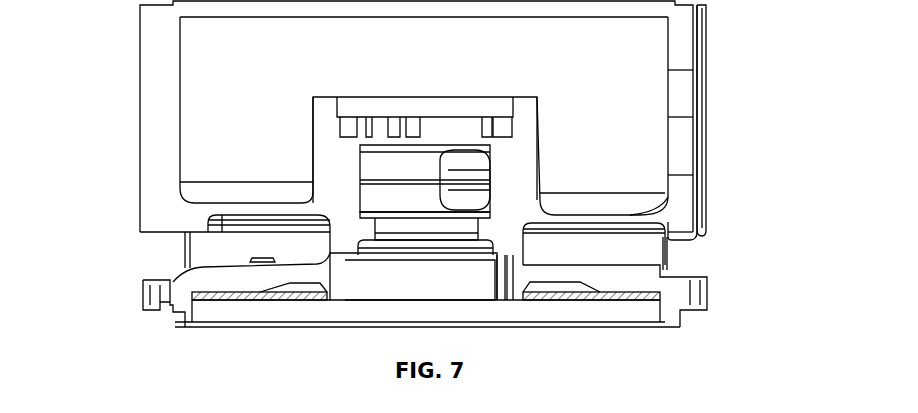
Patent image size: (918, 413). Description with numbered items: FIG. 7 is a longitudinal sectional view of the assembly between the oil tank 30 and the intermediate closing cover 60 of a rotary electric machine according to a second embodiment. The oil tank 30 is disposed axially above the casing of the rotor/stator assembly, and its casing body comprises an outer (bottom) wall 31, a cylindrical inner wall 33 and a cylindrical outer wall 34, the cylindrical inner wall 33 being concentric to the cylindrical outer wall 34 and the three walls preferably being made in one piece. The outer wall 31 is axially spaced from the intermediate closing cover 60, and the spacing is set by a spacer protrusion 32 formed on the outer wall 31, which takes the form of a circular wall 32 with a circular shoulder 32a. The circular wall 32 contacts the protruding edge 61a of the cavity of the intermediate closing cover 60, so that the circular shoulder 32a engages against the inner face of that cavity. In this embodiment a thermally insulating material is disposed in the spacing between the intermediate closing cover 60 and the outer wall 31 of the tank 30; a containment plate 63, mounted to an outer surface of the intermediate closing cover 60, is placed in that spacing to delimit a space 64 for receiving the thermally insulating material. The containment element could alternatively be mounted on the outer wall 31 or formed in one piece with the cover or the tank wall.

The oil tank 30 is at (135, 63).
The cylindrical outer wall 34 is at (158, 148).
The cylindrical inner wall 33 is at (527, 165).
The spacer protrusion 32 is at (325, 245).
The circular shoulder 32a is at (498, 258).
The protruding edge 61a is at (513, 258).
The outer wall 31 is at (272, 210).
The containment plate 63 is at (185, 253).
The space 64 is at (645, 253).
The intermediate closing cover 60 is at (142, 315).